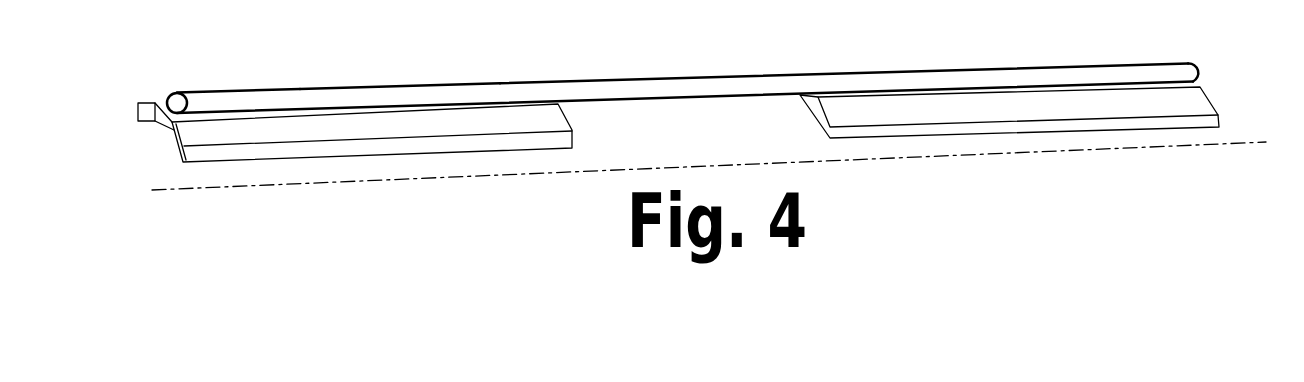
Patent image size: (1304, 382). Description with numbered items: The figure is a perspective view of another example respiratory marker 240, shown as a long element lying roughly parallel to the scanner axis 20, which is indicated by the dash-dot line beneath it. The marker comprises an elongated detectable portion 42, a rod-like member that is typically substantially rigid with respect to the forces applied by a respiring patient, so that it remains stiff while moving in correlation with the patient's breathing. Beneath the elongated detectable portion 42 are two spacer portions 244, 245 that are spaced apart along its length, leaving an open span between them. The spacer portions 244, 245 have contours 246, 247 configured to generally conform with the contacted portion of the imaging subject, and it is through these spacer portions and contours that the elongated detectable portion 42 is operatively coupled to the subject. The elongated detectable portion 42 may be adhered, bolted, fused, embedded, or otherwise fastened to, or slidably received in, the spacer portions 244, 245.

The scanner axis 20 is at (1253, 141).
The elongated detectable portion 42 is at (398, 98).
The respiratory marker 240 is at (555, 63).
The spacer portion 244 is at (553, 120).
The spacer portion 245 is at (1200, 98).
The contour 246 is at (164, 147).
The contour 247 is at (797, 123).